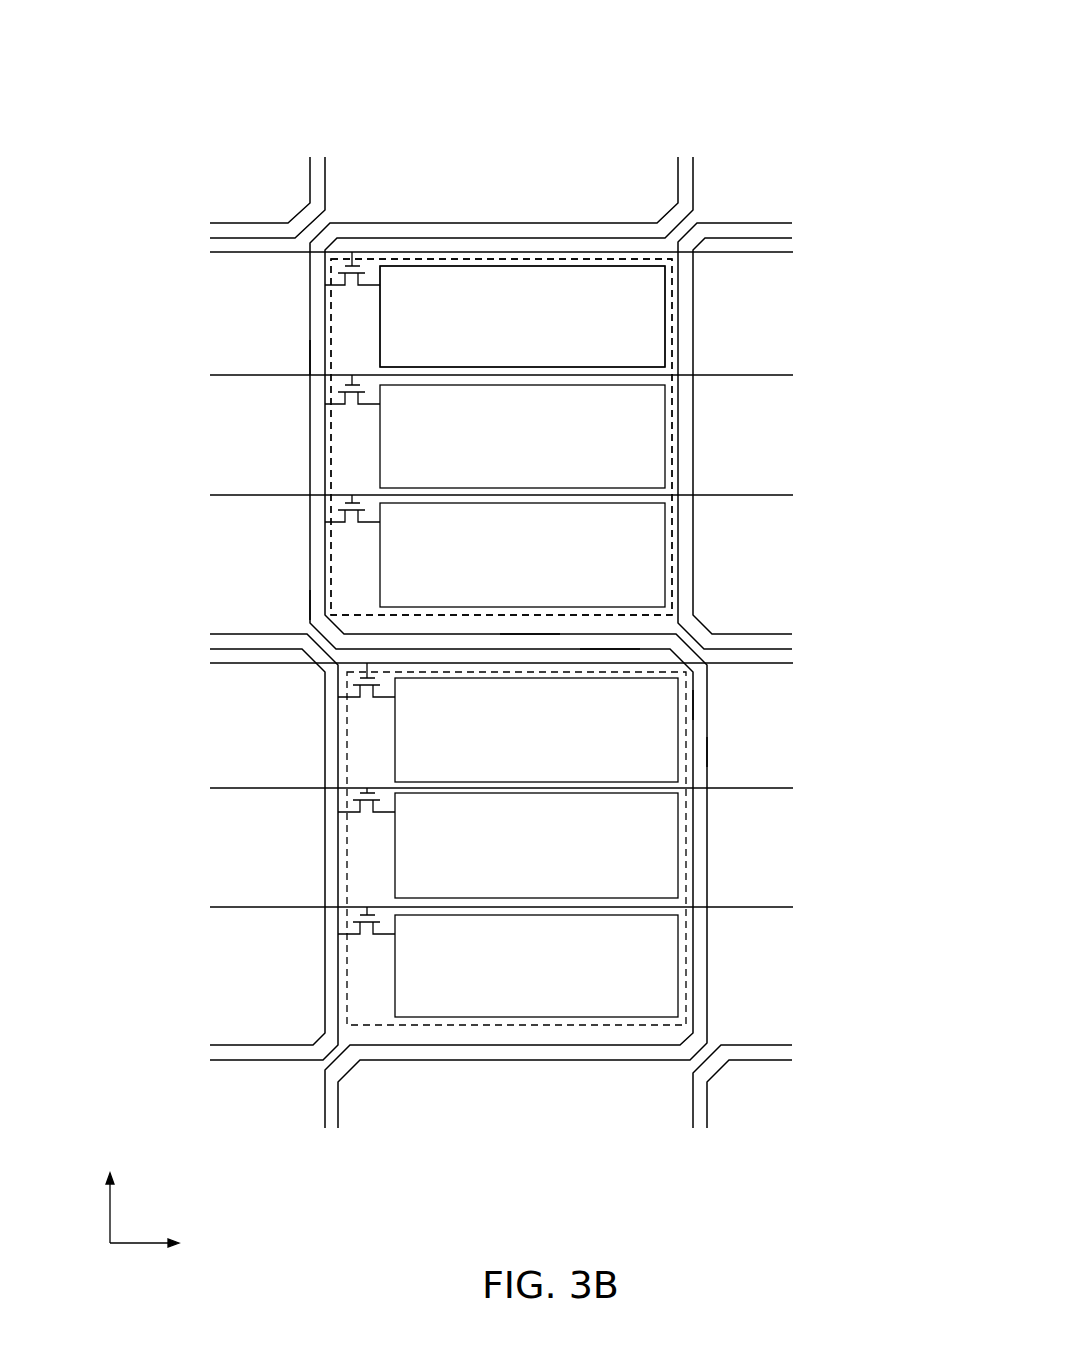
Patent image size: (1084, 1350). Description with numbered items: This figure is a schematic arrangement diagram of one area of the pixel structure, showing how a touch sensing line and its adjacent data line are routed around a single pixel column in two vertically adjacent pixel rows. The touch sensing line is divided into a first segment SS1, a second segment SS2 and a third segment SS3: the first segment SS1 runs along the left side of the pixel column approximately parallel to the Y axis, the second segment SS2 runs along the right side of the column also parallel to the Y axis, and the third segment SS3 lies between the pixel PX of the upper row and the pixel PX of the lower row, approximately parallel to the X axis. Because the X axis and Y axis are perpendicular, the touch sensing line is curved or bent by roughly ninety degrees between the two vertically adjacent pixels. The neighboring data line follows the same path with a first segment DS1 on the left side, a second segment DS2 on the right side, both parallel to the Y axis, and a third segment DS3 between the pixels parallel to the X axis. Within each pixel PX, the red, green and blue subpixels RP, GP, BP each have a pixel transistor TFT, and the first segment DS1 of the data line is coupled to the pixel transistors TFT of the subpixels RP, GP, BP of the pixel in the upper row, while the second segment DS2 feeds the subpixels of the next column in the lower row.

The pixel transistor TFT is at (362, 262).
The pixel PX is at (532, 262).
The red subpixel RP is at (366, 310).
The green subpixel GP is at (366, 445).
The blue subpixel BP is at (366, 565).
The first segment SS1 is at (312, 357).
The second segment SS2 is at (693, 705).
The third segment SS3 is at (600, 648).
The first segment DS1 is at (312, 603).
The second segment DS2 is at (708, 752).
The third segment DS3 is at (528, 635).
The X axis X is at (159, 1248).
The Y axis Y is at (107, 1191).